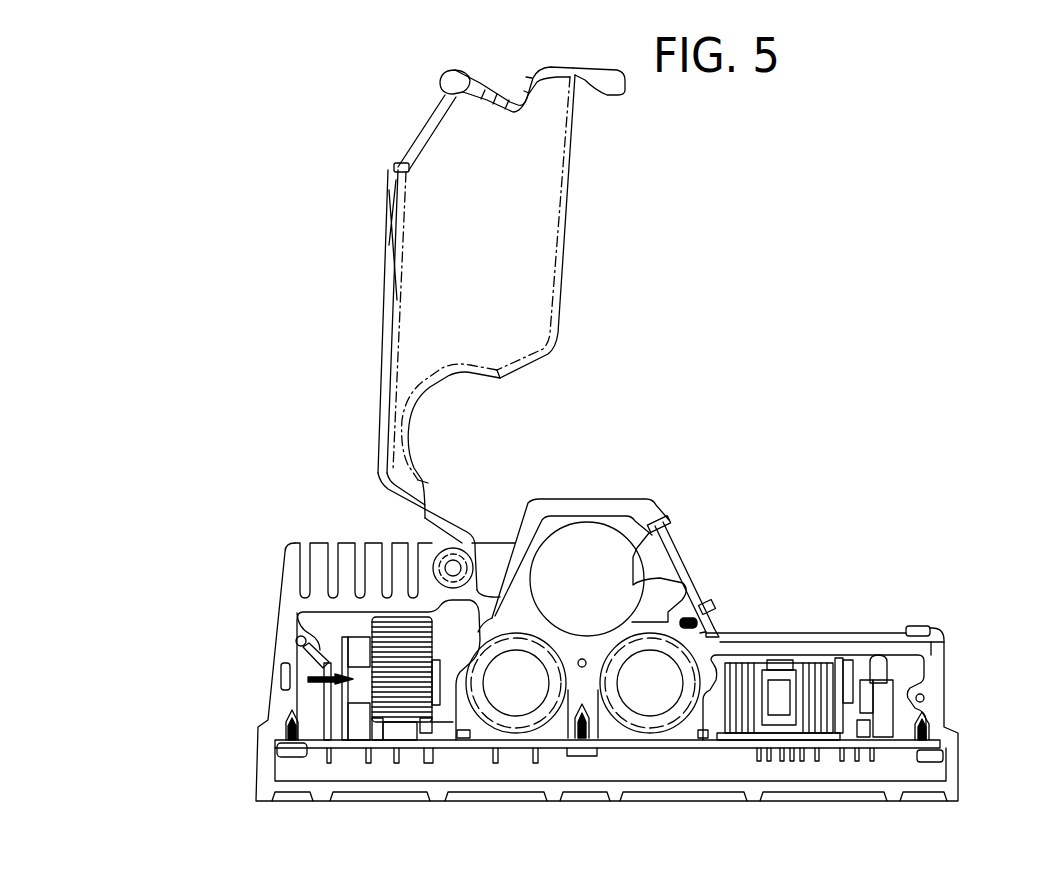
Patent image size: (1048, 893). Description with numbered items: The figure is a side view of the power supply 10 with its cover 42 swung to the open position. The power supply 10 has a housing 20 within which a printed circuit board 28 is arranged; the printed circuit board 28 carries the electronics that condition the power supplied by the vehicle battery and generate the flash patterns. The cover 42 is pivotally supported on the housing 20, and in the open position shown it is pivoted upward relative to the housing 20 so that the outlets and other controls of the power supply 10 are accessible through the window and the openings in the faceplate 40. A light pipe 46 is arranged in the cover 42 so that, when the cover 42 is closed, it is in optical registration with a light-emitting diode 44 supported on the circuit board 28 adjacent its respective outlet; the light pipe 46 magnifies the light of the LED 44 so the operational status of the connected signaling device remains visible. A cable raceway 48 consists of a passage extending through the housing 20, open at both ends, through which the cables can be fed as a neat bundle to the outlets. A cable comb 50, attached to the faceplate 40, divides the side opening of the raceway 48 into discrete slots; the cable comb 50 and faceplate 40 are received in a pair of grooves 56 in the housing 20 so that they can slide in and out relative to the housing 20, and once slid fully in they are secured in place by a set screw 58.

The power supply 10 is at (725, 303).
The housing 20 is at (318, 550).
The printed circuit board 28 is at (887, 750).
The faceplate 40 is at (870, 637).
The cover 42 is at (387, 195).
The light-emitting diode (LED) 44 is at (885, 668).
The light pipe 46 is at (453, 77).
The cable raceway 48 is at (577, 548).
The cable comb 50 is at (690, 567).
The grooves 56 is at (667, 520).
The set screw 58 is at (715, 610).